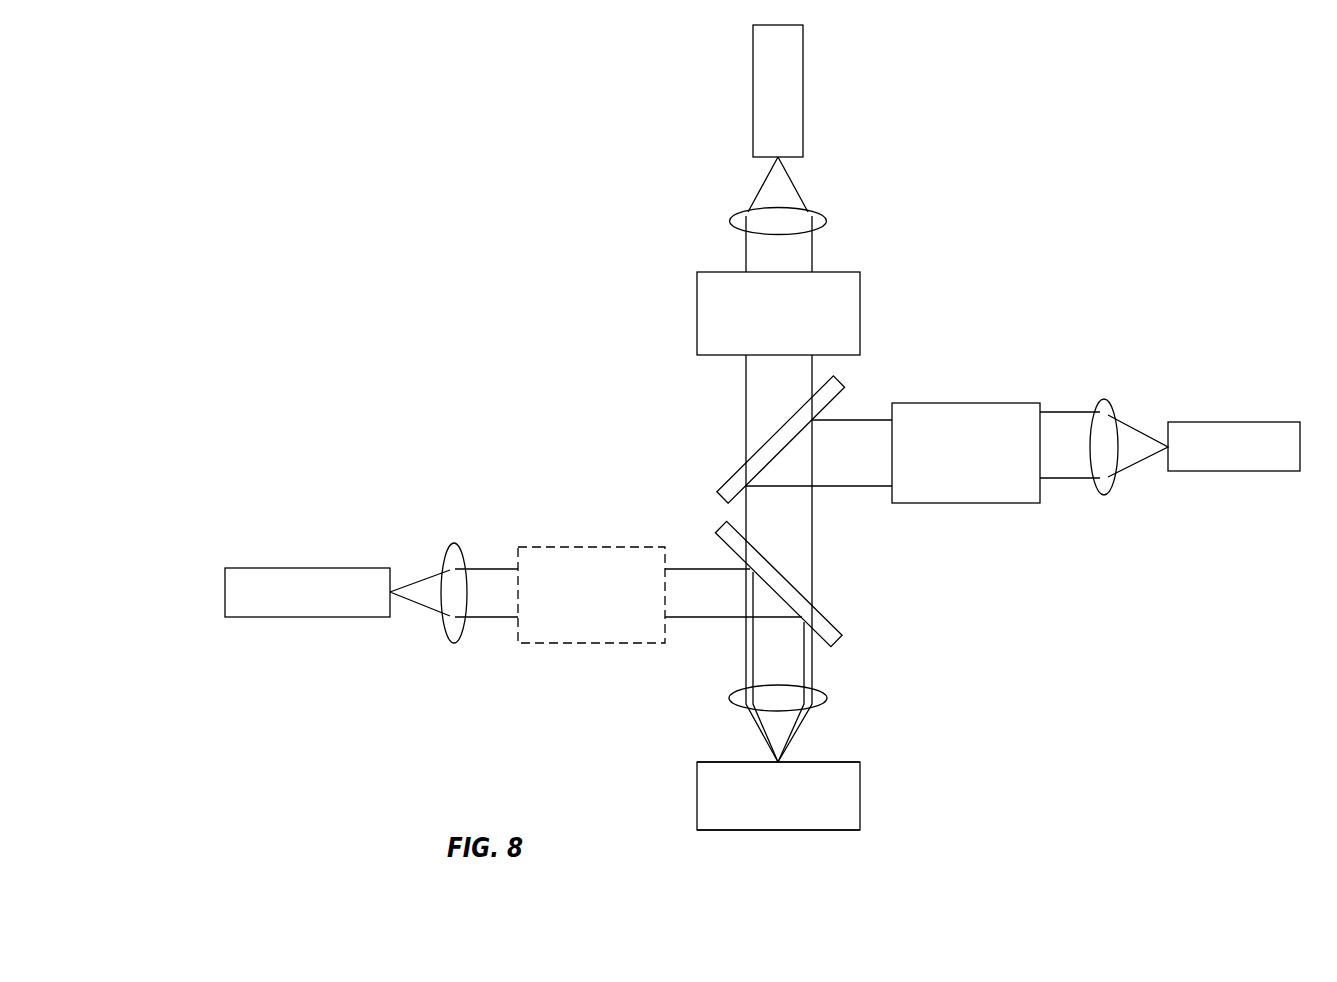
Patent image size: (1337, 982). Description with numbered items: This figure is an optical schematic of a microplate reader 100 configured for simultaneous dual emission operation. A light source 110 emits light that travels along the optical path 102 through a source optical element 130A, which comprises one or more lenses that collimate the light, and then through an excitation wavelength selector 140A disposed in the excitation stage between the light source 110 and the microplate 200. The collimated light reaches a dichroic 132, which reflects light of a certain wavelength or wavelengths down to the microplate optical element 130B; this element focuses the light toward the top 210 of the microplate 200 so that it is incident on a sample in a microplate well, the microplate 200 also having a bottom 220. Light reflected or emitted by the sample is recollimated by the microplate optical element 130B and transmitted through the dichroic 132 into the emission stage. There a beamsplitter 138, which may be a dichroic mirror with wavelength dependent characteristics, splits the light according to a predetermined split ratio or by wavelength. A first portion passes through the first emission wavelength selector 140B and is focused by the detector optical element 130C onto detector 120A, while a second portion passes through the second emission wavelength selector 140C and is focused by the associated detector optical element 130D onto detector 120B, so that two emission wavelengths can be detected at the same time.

The microplate reader 100 is at (514, 109).
The optical path 102 is at (813, 553).
The light source 110 is at (325, 568).
The detector 120A is at (803, 55).
The detector 120B is at (1220, 421).
The source optical element 130A is at (457, 546).
The microplate optical element 130B is at (826, 693).
The detector optical element 130C is at (825, 212).
The detector optical element 130D is at (1106, 400).
The dichroic 132 is at (840, 632).
The beamsplitter 138 is at (728, 478).
The excitation wavelength selector 140A is at (560, 643).
The emission wavelength selector 140B is at (862, 286).
The emission wavelength selector 140C is at (988, 403).
The microplate 200 is at (761, 822).
The top of the microplate 210 is at (833, 762).
The bottom of the microplate 220 is at (832, 831).